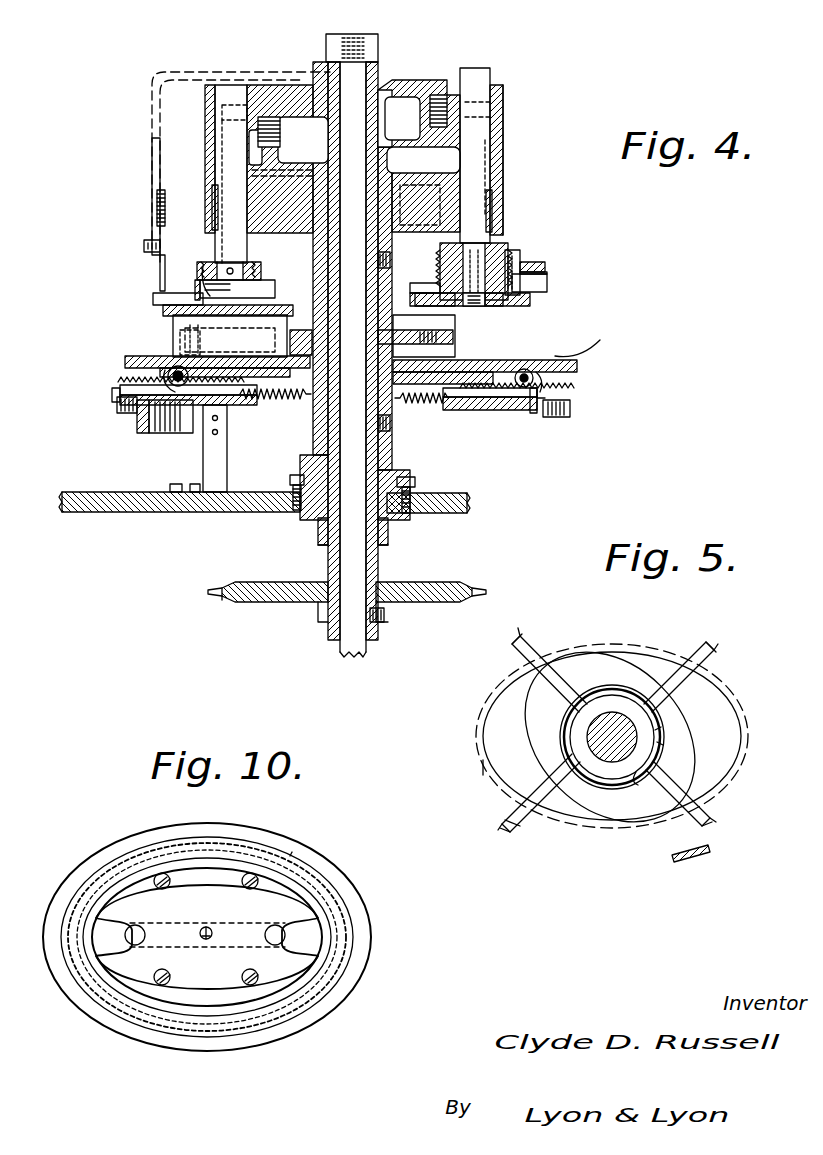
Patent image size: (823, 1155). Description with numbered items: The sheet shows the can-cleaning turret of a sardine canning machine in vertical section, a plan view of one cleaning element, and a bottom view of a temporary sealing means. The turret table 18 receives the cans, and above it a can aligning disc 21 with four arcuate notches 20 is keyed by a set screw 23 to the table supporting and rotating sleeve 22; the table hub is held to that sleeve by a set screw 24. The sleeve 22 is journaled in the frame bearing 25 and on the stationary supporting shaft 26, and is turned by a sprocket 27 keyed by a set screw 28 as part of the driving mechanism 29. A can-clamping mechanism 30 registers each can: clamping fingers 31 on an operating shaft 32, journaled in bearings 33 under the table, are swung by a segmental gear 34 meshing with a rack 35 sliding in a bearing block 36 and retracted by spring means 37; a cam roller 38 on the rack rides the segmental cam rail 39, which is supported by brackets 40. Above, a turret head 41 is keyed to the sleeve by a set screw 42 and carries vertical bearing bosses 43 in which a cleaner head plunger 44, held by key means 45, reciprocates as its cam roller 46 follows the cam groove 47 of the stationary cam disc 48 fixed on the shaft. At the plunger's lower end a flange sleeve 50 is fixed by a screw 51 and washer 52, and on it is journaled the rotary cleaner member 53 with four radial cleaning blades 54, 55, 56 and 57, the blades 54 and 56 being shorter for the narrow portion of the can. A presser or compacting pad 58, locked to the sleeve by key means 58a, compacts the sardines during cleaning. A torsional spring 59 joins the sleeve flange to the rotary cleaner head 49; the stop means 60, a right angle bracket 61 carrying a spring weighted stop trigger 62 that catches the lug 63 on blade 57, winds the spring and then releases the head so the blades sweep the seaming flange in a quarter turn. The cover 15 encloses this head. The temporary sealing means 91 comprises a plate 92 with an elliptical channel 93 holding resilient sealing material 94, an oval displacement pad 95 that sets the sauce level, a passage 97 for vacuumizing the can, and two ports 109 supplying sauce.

In FIG. 4, the housing 15 is at (173, 325).
In FIG. 5, the housing 15 is at (476, 764).
In FIG. 10, the housing 15 is at (296, 850).
In FIG. 4, the turret table 18 is at (140, 362).
In FIG. 4, the arcuate notches 20 is at (300, 356).
In FIG. 4, the can aligning disc 21 is at (300, 340).
In FIG. 4, the table supporting and rotating sleeve 22 is at (328, 566).
In FIG. 4, the set screw 23 is at (400, 330).
In FIG. 4, the set screw 24 is at (392, 428).
In FIG. 4, the frame bearing 25 is at (392, 475).
In FIG. 4, the stationary supporting shaft 26 is at (350, 44).
In FIG. 4, the sprocket 27 is at (444, 588).
In FIG. 4, the set screw 28 is at (384, 618).
In FIG. 4, the driving mechanism 29 is at (254, 606).
In FIG. 4, the can-clamping mechanism 30 is at (106, 378).
In FIG. 4, the clamping fingers 31 is at (180, 338).
In FIG. 4, the operating shaft 32 is at (188, 370).
In FIG. 4, the bearings 33 is at (170, 368).
In FIG. 4, the segmental gear 34 is at (165, 433).
In FIG. 4, the rack 35 is at (115, 390).
In FIG. 4, the bearing block 36 is at (236, 405).
In FIG. 4, the spring means 37 is at (274, 394).
In FIG. 4, the cam roller 38 is at (118, 408).
In FIG. 4, the segmental cam rail 39 is at (140, 420).
In FIG. 4, the brackets 40 is at (227, 468).
In FIG. 4, the turret head 41 is at (516, 92).
In FIG. 4, the set screw 42 is at (390, 258).
In FIG. 4, the bearing bosses 43 is at (205, 150).
In FIG. 4, the cleaner head plunger 44 is at (222, 104).
In FIG. 5, the cleaner head plunger 44 is at (600, 742).
In FIG. 4, the key means 45 is at (212, 200).
In FIG. 4, the cam roller 46 is at (269, 117).
In FIG. 4, the cam groove 47 is at (420, 148).
In FIG. 4, the stationary cam disc 48 is at (398, 80).
In FIG. 4, the rotary cleaner head 49 is at (187, 288).
In FIG. 5, the rotary cleaner head 49 is at (686, 726).
In FIG. 4, the flange sleeve 50 is at (206, 270).
In FIG. 5, the flange sleeve 50 is at (622, 700).
In FIG. 4, the screw 51 is at (470, 306).
In FIG. 4, the washer 52 is at (494, 306).
In FIG. 4, the rotary cleaner member 53 is at (250, 290).
In FIG. 5, the rotary cleaner member 53 is at (598, 686).
In FIG. 5, the cleaning blade 54 is at (532, 648).
In FIG. 4, the cleaning blade 55 is at (418, 283).
In FIG. 5, the cleaning blade 55 is at (700, 642).
In FIG. 5, the cleaning blade 56 is at (708, 822).
In FIG. 4, the cleaning blade 57 is at (547, 290).
In FIG. 5, the cleaning blade 57 is at (520, 830).
In FIG. 4, the presser or compacting pad 58 is at (275, 306).
In FIG. 5, the presser or compacting pad 58 is at (483, 736).
In FIG. 4, the key means 58a is at (440, 312).
In FIG. 4, the torsional spring 59 is at (262, 270).
In FIG. 5, the torsional spring 59 is at (636, 786).
In FIG. 4, the stop means 60 is at (136, 249).
In FIG. 4, the right angle bracket 61 is at (152, 158).
In FIG. 4, the spring weighted stop trigger 62 is at (160, 270).
In FIG. 5, the spring weighted stop trigger 62 is at (688, 862).
In FIG. 4, the lug 63 is at (153, 299).
In FIG. 5, the lug 63 is at (504, 835).
In FIG. 10, the temporary sealing means 91 is at (376, 952).
In FIG. 10, the plate 92 is at (333, 860).
In FIG. 10, the elliptical channel 93 is at (335, 888).
In FIG. 10, the resilient sealing material 94 is at (298, 998).
In FIG. 10, the oval displacement pad 95 is at (204, 992).
In FIG. 10, the passage 97 is at (206, 926).
In FIG. 10, the ports 109 is at (132, 945).